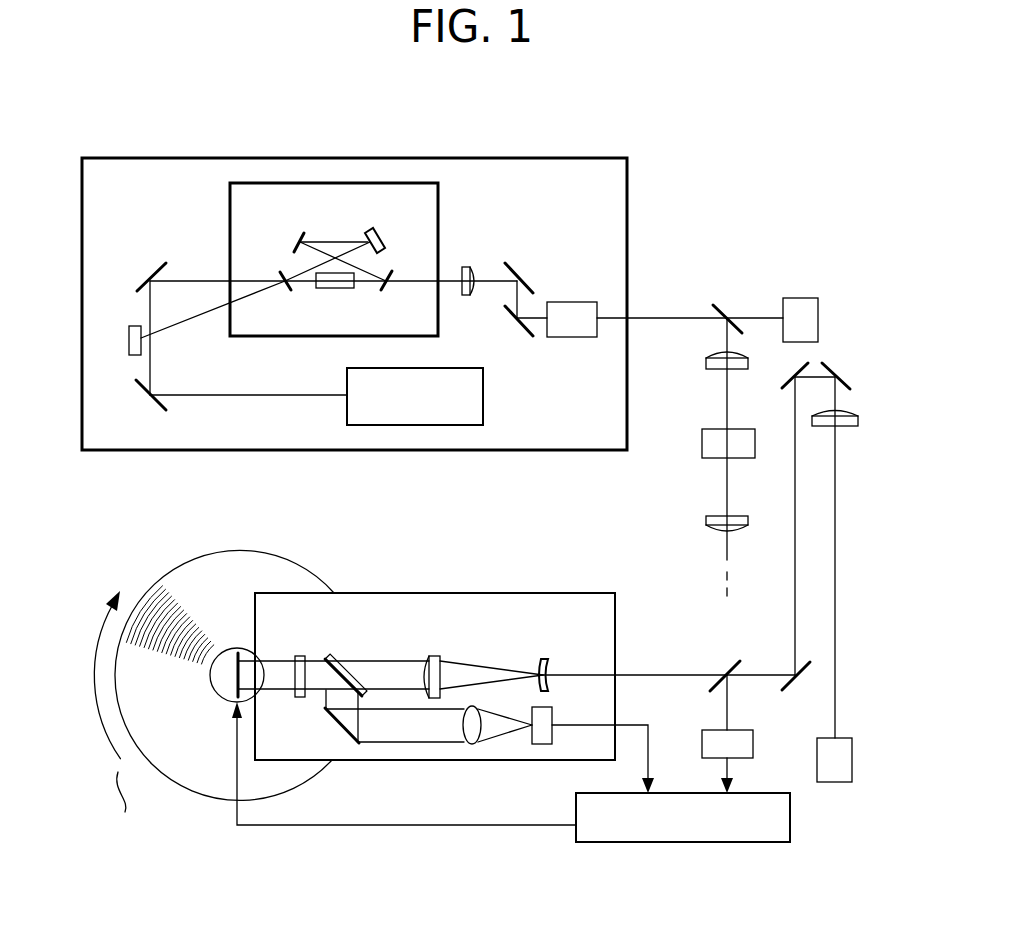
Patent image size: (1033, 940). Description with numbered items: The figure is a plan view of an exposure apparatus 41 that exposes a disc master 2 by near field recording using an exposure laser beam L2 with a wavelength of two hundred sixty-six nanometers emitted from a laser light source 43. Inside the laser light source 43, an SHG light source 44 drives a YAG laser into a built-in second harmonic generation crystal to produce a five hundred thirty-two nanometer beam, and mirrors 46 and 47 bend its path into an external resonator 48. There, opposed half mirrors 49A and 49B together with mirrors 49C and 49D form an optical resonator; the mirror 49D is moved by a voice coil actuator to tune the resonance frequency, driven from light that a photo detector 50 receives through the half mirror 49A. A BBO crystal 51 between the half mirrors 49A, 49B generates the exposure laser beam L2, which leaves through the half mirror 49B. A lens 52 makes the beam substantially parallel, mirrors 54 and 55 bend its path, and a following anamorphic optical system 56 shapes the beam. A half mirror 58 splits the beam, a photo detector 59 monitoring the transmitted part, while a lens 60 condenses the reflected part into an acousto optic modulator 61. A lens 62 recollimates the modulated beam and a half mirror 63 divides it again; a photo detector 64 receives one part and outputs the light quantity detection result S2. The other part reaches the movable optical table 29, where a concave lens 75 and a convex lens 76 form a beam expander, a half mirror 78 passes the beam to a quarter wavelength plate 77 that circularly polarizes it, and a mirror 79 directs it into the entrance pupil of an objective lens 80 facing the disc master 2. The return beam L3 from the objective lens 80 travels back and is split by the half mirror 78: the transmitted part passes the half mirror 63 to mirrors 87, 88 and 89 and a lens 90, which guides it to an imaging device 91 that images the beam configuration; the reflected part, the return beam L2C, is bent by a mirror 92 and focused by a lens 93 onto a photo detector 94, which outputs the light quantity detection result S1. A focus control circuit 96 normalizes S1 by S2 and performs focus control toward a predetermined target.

The disc master 2 is at (186, 583).
The movable optical table 29 is at (548, 593).
The exposure apparatus 41 is at (660, 170).
The laser light source 43 is at (147, 158).
The SHG light source 44 is at (483, 400).
The mirror 46 is at (141, 399).
The mirror 47 is at (140, 282).
The external resonator 48 is at (230, 205).
The half mirror 49A is at (280, 276).
The half mirror 49B is at (388, 292).
The mirror 49C is at (295, 246).
The mirror 49D is at (369, 232).
The photo detector 50 is at (129, 333).
The BBO crystal 51 is at (334, 289).
The lens 52 is at (468, 266).
The mirror 54 is at (519, 262).
The mirror 55 is at (527, 338).
The optical modulator 56 is at (582, 301).
The half mirror 58 is at (729, 304).
The photo detector 59 is at (800, 298).
The lens 60 is at (706, 366).
The acousto optic modulator 61 is at (702, 441).
The lens 62 is at (706, 521).
The half mirror 63 is at (724, 672).
The photo detector 64 is at (706, 730).
The concave lens 75 is at (543, 658).
The convex lens 76 is at (434, 655).
The ¼ wavelength plate 77 is at (302, 655).
The half mirror 78 is at (352, 668).
The mirror 79 is at (232, 684).
The objective lens 80 is at (233, 654).
The mirror 87 is at (800, 690).
The mirror 88 is at (784, 390).
The mirror 89 is at (844, 370).
The lens 90 is at (858, 421).
The imaging device 91 is at (852, 760).
The mirror 92 is at (334, 721).
The lens 93 is at (479, 709).
The photo detector 94 is at (553, 720).
The focus control circuit 96 is at (756, 843).
The exposure laser beam L2 is at (665, 318).
The return beam L3 is at (835, 585).
The light beam L2C is at (410, 744).
The light quantity detection result S1 is at (648, 750).
The light quantity detection result S2 is at (727, 768).